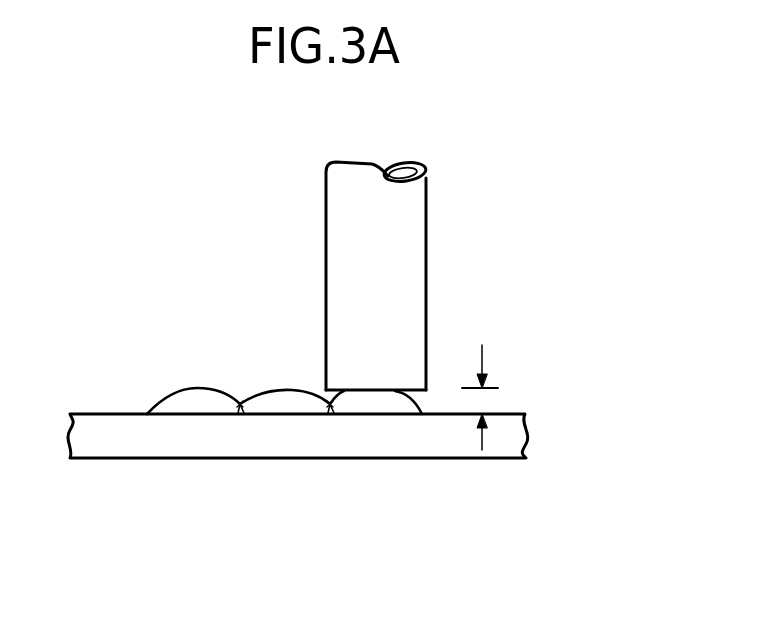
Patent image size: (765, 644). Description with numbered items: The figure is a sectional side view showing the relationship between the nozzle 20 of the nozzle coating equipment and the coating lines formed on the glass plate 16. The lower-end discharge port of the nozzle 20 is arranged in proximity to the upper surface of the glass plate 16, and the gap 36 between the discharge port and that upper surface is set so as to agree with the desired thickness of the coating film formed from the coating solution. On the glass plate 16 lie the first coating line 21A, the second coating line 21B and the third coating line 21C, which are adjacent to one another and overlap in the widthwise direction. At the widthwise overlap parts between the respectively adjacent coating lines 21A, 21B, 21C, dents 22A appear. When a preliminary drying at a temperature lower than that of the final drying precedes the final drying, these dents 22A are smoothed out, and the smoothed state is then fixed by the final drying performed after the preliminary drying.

The glass plate 16 is at (505, 458).
The nozzle 20 is at (426, 258).
The first coating line 21A is at (186, 391).
The second coating line 21B is at (283, 390).
The third coating line 21C is at (368, 403).
The dent 22A is at (240, 398).
The gap 36 is at (482, 401).